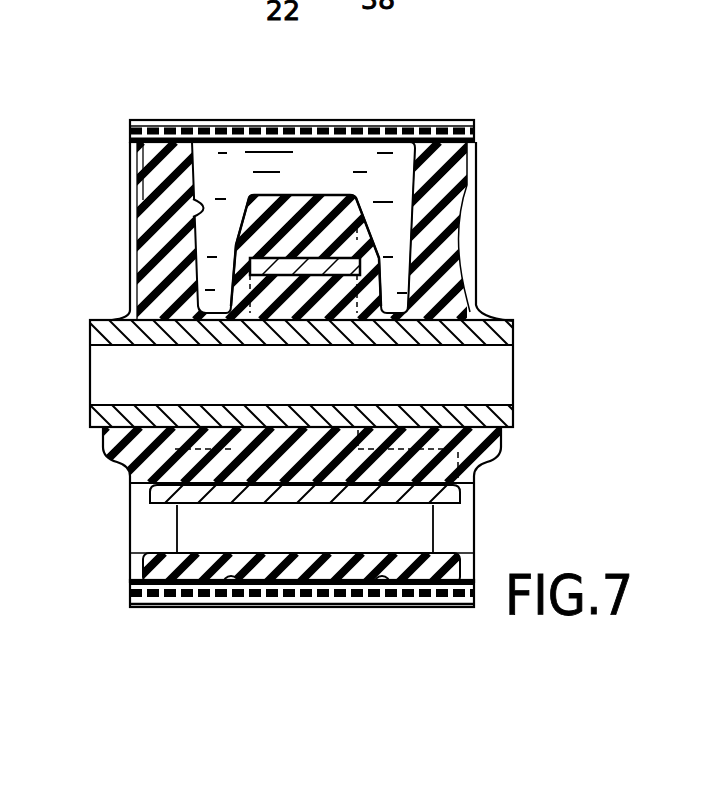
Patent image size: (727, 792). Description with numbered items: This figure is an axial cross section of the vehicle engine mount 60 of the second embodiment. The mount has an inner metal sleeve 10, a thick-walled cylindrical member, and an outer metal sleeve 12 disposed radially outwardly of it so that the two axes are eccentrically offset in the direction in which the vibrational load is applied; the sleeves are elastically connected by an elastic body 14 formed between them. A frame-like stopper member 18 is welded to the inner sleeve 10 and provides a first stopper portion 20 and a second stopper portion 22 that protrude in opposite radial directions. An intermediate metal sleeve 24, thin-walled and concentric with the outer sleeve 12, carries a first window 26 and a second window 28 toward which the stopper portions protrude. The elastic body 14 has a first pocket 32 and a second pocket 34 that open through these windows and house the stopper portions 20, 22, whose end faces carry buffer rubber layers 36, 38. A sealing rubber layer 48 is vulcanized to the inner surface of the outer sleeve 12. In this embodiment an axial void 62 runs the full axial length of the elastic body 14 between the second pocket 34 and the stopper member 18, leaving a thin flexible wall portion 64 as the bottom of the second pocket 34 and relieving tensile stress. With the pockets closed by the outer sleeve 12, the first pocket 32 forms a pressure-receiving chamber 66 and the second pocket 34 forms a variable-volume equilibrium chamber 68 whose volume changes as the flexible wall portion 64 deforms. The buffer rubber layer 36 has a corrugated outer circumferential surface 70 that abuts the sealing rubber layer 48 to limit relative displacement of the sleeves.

The inner metal sleeve 10 is at (483, 318).
The outer metal sleeve 12 is at (257, 607).
The elastic body 14 is at (468, 219).
The stopper member 18 is at (298, 512).
The first stopper portion 20 is at (332, 258).
The second stopper portion 22 is at (213, 492).
The intermediate metal sleeve 24 is at (458, 127).
The first window 26 is at (200, 127).
The second window 28 is at (420, 603).
The first pocket 32 is at (205, 200).
The second pocket 34 is at (377, 600).
The buffer rubber layer 36 is at (291, 210).
The buffer rubber layer 38 is at (385, 506).
The sealing rubber layer 48 is at (243, 127).
The vehicle engine mount 60 is at (122, 52).
The axial void 62 is at (190, 527).
The flexible wall portion 64 is at (343, 600).
The pressure-receiving chamber 66 is at (393, 181).
The variable-volume equilibrium chamber 68 is at (282, 600).
The outer circumferential surface 70 is at (308, 210).